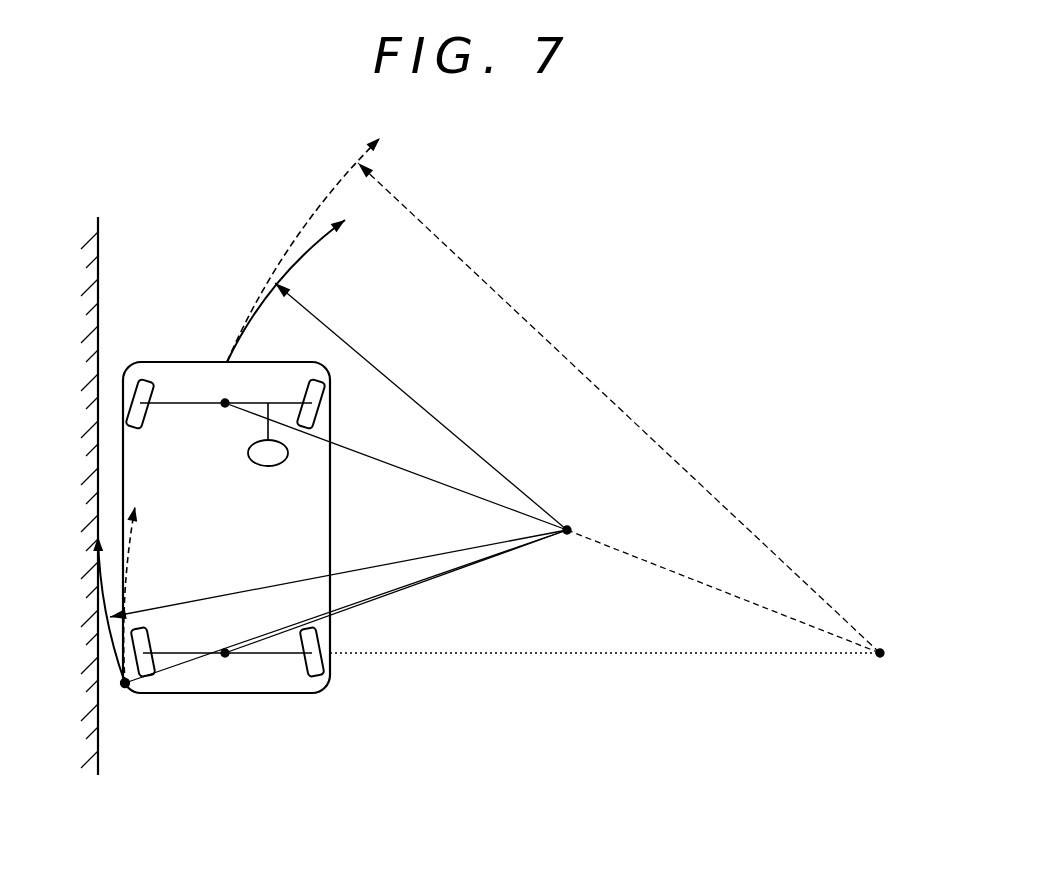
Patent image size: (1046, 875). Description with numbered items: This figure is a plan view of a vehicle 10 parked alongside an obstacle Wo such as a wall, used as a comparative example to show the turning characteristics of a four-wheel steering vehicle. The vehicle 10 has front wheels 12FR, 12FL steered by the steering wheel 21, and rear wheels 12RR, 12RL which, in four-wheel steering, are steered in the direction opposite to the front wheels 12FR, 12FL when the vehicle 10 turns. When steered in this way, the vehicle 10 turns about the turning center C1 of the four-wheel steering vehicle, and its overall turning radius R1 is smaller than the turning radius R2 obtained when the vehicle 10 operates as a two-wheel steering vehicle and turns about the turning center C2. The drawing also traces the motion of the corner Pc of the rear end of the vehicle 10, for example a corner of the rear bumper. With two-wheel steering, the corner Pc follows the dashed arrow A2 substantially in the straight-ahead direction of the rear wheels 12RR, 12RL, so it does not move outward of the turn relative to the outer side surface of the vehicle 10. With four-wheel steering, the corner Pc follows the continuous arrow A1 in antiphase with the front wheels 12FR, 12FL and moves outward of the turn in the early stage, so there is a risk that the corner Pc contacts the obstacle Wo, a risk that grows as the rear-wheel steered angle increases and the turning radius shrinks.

The vehicle 10 is at (333, 512).
The front left wheel 12FL is at (140, 424).
The front right wheel 12FR is at (306, 421).
The rear left wheel 12RL is at (143, 640).
The rear right wheel 12RR is at (312, 640).
The steering wheel 21 is at (252, 466).
The obstacle Wo is at (106, 222).
The turning center of the four-wheel steering vehicle C1 is at (563, 548).
The turning center of the two-wheel steering vehicle C2 is at (879, 671).
The turning radius of the four-wheel steering vehicle R1 is at (397, 375).
The turning radius of the two-wheel steering vehicle R2 is at (553, 395).
The continuous arrow A1 is at (104, 615).
The dashed arrow A2 is at (137, 535).
The corner of the rear end of the vehicle Pc is at (126, 688).